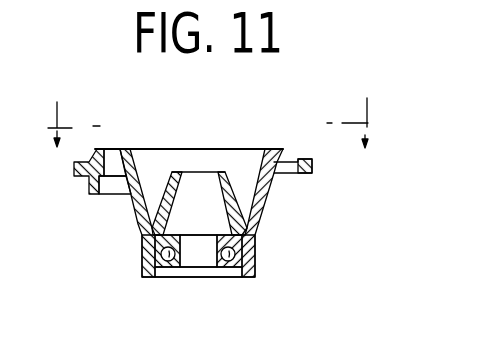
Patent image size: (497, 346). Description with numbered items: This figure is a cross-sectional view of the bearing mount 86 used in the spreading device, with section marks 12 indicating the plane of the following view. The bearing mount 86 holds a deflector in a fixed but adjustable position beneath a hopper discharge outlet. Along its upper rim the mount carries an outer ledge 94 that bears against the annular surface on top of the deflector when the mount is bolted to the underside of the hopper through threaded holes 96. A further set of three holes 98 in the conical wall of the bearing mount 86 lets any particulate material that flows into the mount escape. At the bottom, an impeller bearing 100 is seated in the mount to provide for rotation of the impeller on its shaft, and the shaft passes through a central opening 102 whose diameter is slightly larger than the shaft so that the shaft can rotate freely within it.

The section line 12- 12 is at (221, 123).
The bearing mount 86 is at (330, 207).
The outer ledge 94 is at (81, 158).
The threaded holes 96 is at (110, 187).
The holes 98 is at (243, 192).
The impeller bearing 100 is at (168, 265).
The opening 102 is at (202, 183).